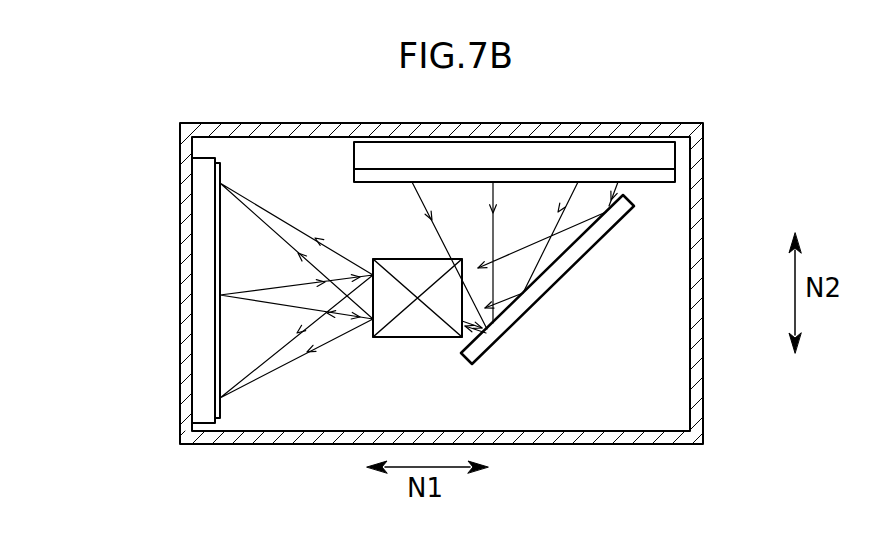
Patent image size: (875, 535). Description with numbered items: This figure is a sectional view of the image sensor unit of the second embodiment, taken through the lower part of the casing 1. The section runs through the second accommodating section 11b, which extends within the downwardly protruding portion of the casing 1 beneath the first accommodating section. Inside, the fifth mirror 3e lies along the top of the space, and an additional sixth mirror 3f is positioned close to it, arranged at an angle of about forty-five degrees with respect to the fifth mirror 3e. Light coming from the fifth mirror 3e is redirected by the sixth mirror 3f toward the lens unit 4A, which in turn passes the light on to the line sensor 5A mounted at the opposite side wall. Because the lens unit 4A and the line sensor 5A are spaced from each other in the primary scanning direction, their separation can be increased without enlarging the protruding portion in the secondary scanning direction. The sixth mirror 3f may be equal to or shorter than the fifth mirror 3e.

The casing 1 is at (697, 158).
The second accommodating section 11b is at (673, 272).
The fifth mirror 3e is at (628, 156).
The sixth mirror 3f is at (523, 305).
The lens unit 4A is at (413, 338).
The line sensor 5A is at (223, 205).